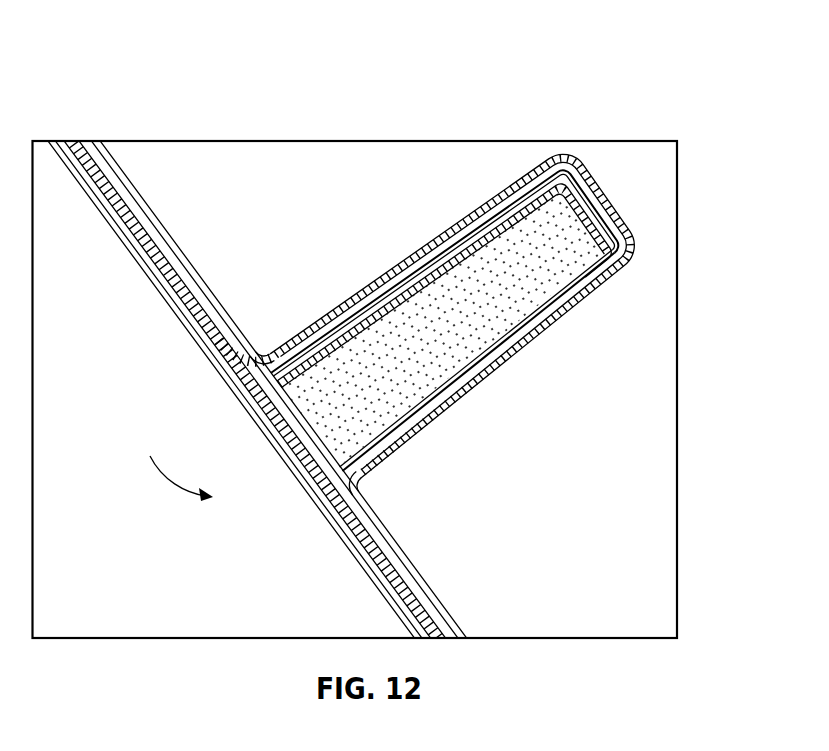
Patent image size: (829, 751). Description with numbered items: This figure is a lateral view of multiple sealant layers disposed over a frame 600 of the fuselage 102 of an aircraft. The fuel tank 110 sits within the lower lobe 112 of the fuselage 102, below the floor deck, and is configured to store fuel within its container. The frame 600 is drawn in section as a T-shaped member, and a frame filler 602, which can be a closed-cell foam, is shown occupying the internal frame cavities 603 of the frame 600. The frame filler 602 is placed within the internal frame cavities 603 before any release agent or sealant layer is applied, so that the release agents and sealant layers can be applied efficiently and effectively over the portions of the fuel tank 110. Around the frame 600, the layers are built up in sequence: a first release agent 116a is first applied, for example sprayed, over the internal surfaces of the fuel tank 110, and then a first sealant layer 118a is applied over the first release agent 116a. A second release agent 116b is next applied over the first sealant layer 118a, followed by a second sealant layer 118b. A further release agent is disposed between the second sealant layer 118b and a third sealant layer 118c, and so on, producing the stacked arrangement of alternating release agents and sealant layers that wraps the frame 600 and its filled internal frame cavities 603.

The fuselage 102 is at (290, 468).
The fuel tank 110 is at (733, 138).
The lower lobe 112 is at (168, 462).
The first release agent 116a is at (465, 368).
The second release agent 116b is at (507, 343).
The first sealant layer 118a is at (588, 274).
The second sealant layer 118b is at (612, 265).
The third sealant layer 118c is at (637, 226).
The frame 600 is at (560, 185).
The frame filler 602 is at (453, 292).
The internal frame cavity 603 is at (597, 220).